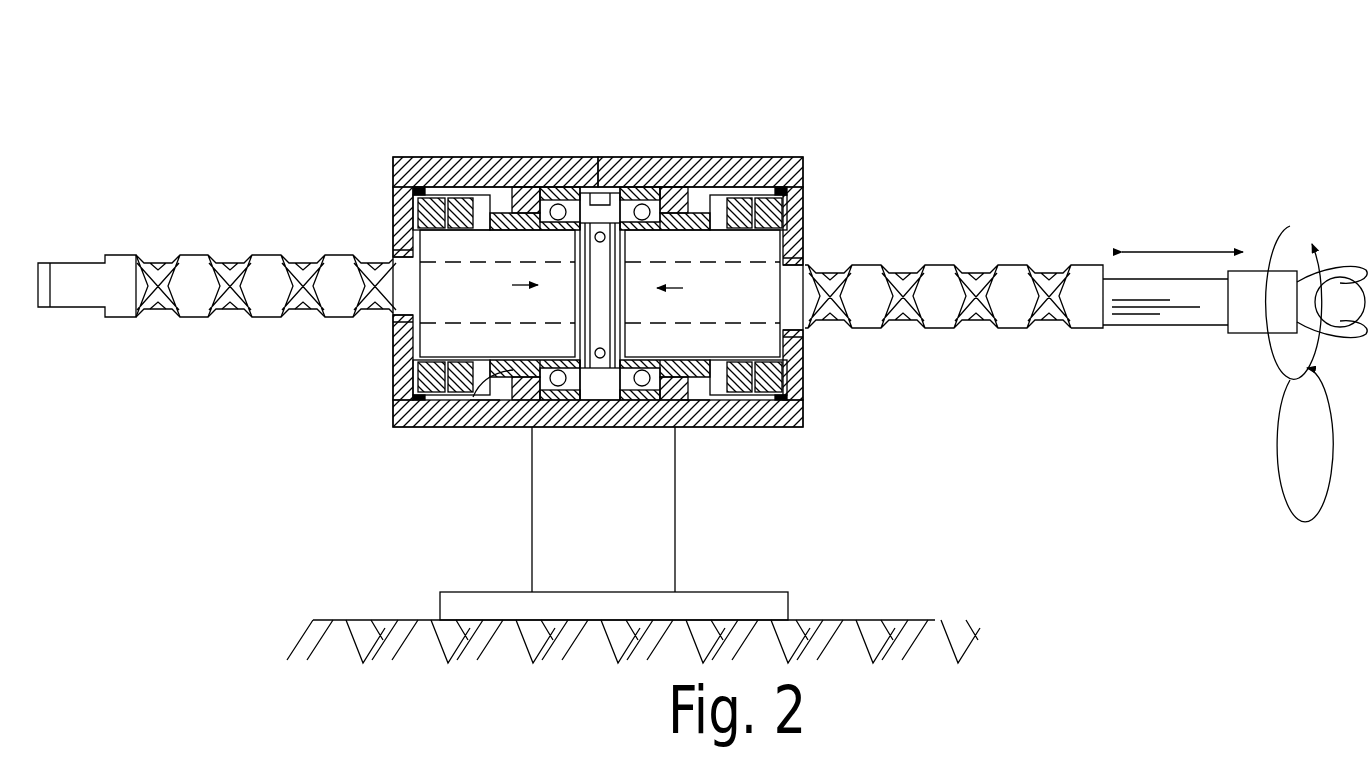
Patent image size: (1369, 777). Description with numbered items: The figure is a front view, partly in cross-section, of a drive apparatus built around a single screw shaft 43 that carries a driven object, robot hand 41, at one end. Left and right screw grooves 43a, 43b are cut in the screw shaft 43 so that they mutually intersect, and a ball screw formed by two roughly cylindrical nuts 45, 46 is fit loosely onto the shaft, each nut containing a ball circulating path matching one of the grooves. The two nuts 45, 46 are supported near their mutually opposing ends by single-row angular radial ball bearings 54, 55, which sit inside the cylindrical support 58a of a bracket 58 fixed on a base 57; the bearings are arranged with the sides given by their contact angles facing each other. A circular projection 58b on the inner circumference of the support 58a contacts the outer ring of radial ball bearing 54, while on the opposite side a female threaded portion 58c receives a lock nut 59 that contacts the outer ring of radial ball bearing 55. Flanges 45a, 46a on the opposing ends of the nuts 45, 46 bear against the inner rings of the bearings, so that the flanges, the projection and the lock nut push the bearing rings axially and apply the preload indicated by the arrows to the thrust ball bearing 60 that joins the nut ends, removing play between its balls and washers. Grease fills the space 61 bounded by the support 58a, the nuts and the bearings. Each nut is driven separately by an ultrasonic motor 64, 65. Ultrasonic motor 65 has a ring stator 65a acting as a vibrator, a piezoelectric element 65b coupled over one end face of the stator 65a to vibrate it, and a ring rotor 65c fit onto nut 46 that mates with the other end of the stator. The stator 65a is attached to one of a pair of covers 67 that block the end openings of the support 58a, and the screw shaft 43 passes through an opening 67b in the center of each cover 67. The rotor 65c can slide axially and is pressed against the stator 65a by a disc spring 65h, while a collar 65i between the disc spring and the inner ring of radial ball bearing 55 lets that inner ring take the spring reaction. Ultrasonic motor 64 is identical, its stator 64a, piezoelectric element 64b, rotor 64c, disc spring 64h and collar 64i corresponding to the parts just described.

The robot hand 41 is at (1336, 250).
The screw shaft 43 is at (1066, 260).
The left screw groove 43a is at (215, 262).
The right screw groove 43b is at (220, 306).
The nut 45 is at (805, 350).
The flange 45a is at (620, 185).
The nut 46 is at (395, 348).
The flange 46a is at (582, 185).
The radial ball bearing 54 is at (655, 172).
The radial ball bearing 55 is at (560, 172).
The base 57 is at (780, 613).
The bracket 58 is at (522, 442).
The cylindrical support 58a is at (745, 428).
The circular projection 58b is at (693, 428).
The female threaded portion 58c is at (483, 428).
The lock nut 59 is at (457, 428).
The thrust ball bearing 60 is at (599, 205).
The space 61 is at (603, 380).
The ultrasonic motor 64 is at (805, 165).
The stator 64a is at (805, 197).
The piezoelectric element 64b is at (805, 205).
The rotor 64c is at (763, 175).
The disc spring 64h is at (740, 170).
The collar 64i is at (707, 175).
The ultrasonic motor 65 is at (395, 173).
The stator 65a is at (395, 198).
The piezoelectric element 65b is at (395, 207).
The rotor 65c is at (445, 185).
The disc spring 65h is at (470, 170).
The collar 65i is at (495, 175).
The cover 67 is at (395, 245).
The opening 67b is at (390, 325).